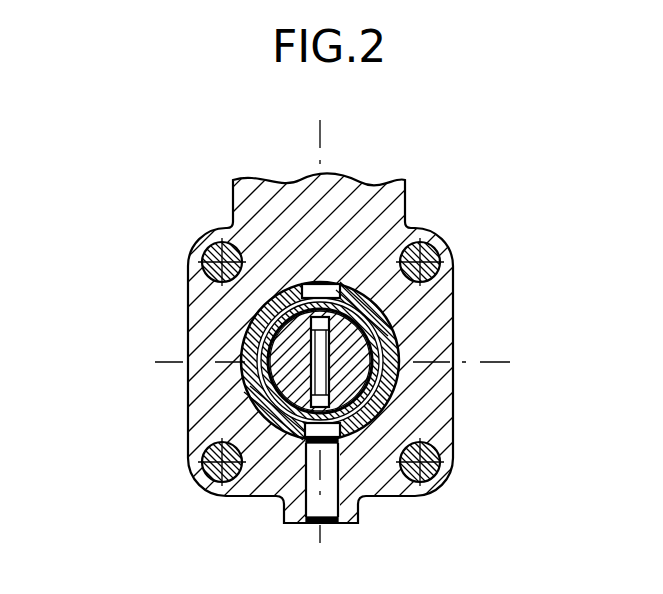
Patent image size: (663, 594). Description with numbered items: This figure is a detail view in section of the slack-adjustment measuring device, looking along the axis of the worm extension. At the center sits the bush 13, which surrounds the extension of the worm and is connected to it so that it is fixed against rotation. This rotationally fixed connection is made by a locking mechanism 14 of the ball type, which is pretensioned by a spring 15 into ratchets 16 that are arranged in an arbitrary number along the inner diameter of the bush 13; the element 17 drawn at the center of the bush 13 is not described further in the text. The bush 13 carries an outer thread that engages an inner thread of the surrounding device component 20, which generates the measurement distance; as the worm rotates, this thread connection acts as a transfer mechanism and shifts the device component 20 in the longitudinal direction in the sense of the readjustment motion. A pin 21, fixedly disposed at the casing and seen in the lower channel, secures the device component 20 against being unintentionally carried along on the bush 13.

The bush 13 is at (375, 390).
The locking mechanism 14 is at (343, 298).
The spring 15 is at (402, 321).
The ratchets 16 is at (262, 352).
The key 17 is at (302, 328).
The device component 20 is at (262, 398).
The pin 21 is at (317, 493).